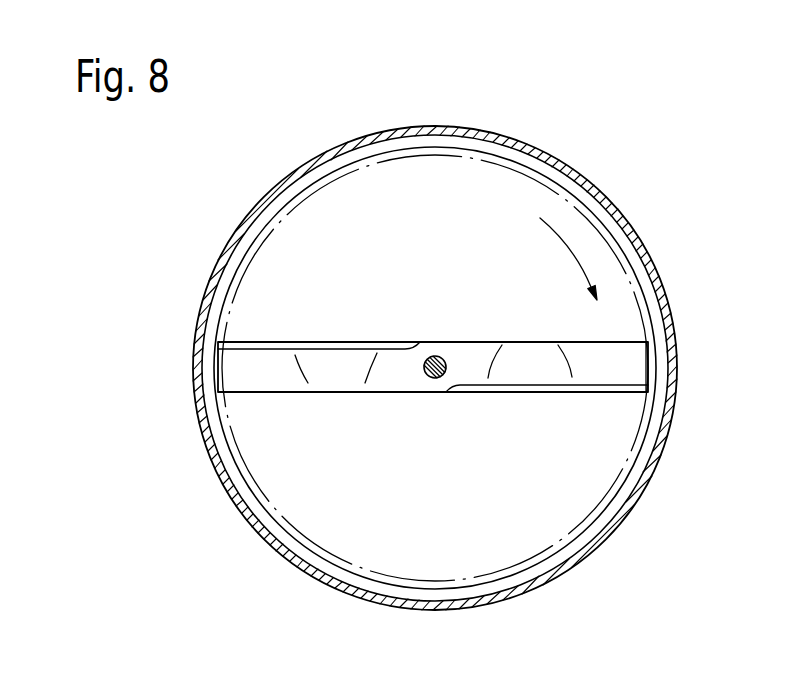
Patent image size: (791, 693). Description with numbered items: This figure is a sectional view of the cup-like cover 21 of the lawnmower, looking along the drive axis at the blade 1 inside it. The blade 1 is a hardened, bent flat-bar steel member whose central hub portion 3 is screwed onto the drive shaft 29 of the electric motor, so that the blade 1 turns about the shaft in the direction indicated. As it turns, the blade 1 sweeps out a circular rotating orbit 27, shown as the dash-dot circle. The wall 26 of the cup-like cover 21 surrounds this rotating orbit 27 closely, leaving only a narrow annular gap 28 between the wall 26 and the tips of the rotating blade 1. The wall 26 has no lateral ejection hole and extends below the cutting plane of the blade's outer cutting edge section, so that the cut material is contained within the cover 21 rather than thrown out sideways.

The cup-like cover 21 is at (506, 120).
The wall 26 is at (583, 177).
The narrow annular gap 28 is at (222, 285).
The rotating orbit 27 is at (238, 467).
The blade 1 is at (496, 411).
The hub portion 3 is at (403, 372).
The drive shaft 29 is at (437, 356).